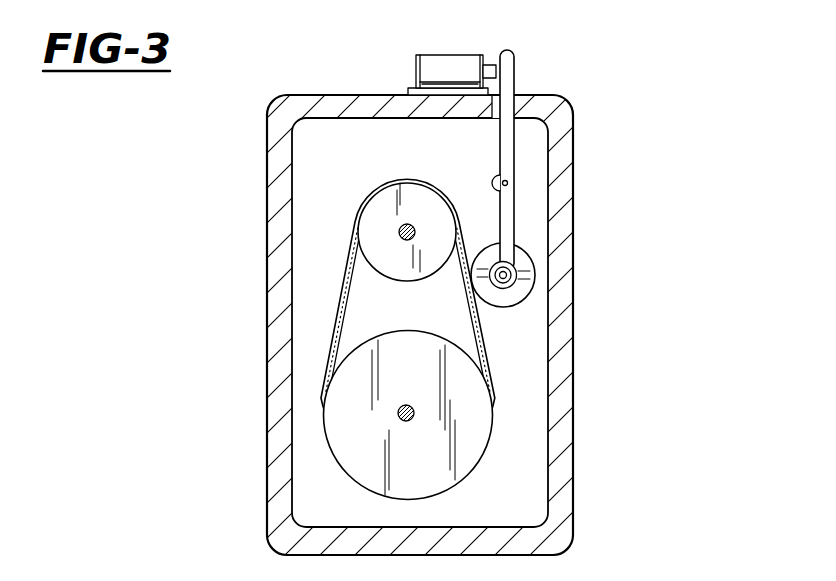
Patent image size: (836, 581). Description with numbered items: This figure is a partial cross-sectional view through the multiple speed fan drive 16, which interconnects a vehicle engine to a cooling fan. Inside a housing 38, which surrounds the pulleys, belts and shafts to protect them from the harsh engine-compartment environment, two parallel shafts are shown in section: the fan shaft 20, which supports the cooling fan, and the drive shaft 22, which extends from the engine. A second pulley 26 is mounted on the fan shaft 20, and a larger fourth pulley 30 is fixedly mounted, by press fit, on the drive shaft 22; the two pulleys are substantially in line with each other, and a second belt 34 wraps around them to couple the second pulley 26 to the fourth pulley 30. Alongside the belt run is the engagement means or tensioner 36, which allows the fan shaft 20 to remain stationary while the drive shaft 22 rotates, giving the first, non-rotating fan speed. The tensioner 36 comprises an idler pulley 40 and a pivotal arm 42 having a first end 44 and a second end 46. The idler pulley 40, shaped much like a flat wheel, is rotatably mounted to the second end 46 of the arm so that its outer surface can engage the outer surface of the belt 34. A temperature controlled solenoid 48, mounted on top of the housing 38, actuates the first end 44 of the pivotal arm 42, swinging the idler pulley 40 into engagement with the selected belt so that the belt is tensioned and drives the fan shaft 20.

The multiple speed fan drive 16 is at (676, 196).
The fan shaft 20 is at (310, 220).
The drive shaft 22 is at (406, 421).
The second pulley 26 is at (331, 232).
The fourth pulley 30 is at (398, 424).
The second belt 34 is at (340, 314).
The engagement means (tensioner) 36 is at (418, 290).
The housing 38 is at (558, 452).
The idler pulley 40 is at (523, 297).
The pivotal arm 42 is at (488, 144).
The first end of the pivotal arm 44 is at (514, 67).
The second end of the pivotal arm 46 is at (508, 262).
The temperature controlled solenoid 48 is at (430, 67).